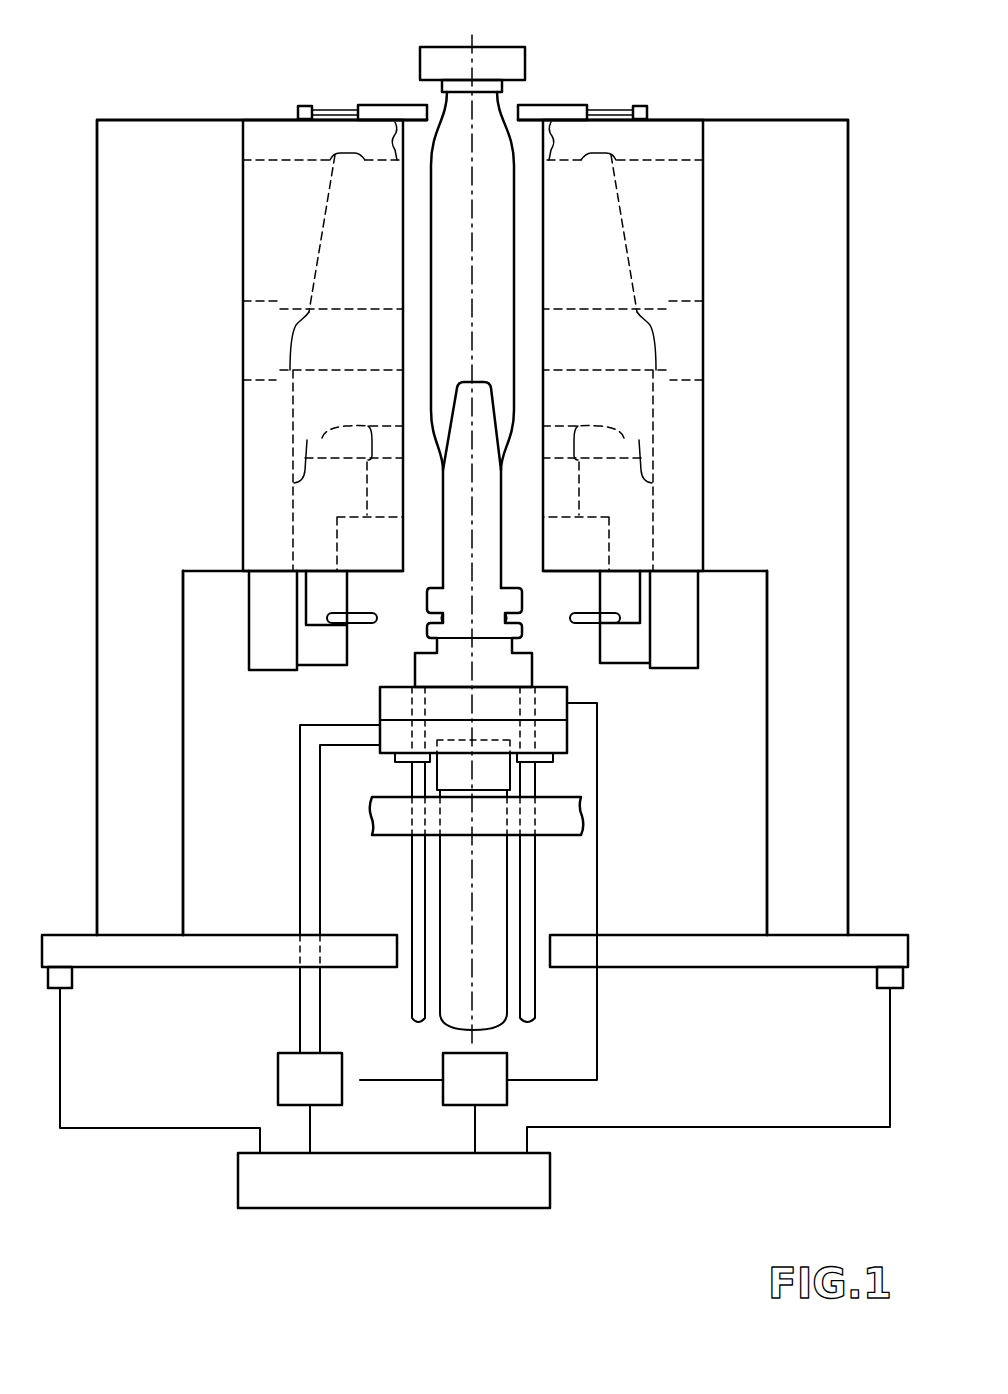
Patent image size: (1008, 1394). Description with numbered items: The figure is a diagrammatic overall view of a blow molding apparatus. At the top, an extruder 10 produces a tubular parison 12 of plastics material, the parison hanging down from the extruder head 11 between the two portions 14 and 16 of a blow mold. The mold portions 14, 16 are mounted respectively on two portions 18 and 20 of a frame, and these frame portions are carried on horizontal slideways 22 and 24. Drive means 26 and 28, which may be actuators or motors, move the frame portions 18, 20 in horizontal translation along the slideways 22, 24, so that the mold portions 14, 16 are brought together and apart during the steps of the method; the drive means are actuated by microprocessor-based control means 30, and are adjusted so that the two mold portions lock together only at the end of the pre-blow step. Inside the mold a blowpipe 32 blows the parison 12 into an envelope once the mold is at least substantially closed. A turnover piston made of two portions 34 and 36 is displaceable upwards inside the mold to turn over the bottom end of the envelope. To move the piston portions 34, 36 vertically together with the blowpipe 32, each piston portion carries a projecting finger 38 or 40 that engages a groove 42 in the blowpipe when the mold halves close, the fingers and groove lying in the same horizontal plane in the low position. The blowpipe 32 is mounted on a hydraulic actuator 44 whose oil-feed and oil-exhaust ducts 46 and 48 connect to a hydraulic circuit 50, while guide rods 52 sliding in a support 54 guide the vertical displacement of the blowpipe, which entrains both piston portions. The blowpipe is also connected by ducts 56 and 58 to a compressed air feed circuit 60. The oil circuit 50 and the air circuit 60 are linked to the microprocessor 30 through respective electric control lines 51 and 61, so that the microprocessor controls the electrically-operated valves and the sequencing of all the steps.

The extruder 10 is at (512, 47).
The blow pin neck 11 is at (445, 90).
The tubular parison 12 is at (498, 108).
The blow mold portion 14 is at (676, 133).
The blow mold portion 16 is at (286, 135).
The frame portion 18 is at (848, 195).
The frame portion 20 is at (97, 190).
The horizontal slideway 22 is at (771, 958).
The horizontal slideway 24 is at (178, 960).
The drive means 26 is at (877, 977).
The drive means 28 is at (72, 978).
The microprocessor-based control means 30 is at (401, 1210).
The blowpipe 32 is at (490, 549).
The turnover piston portion 34 is at (624, 440).
The turnover piston portion 36 is at (322, 438).
The projecting finger 38 is at (580, 617).
The projecting finger 40 is at (380, 617).
The groove 42 is at (513, 620).
The hydraulic actuator 44 is at (445, 779).
The oil-feed and oil-exhaust duct 46 is at (320, 857).
The oil-feed and oil-exhaust duct 48 is at (300, 781).
The hydraulic circuit 50 is at (278, 1080).
The electric control line 51 is at (312, 1126).
The guide rod 52 is at (532, 782).
The support 54 is at (574, 813).
The duct 56 is at (597, 735).
The duct 58 is at (380, 703).
The compressed air feed circuit 60 is at (507, 1093).
The electric control line 61 is at (473, 1126).